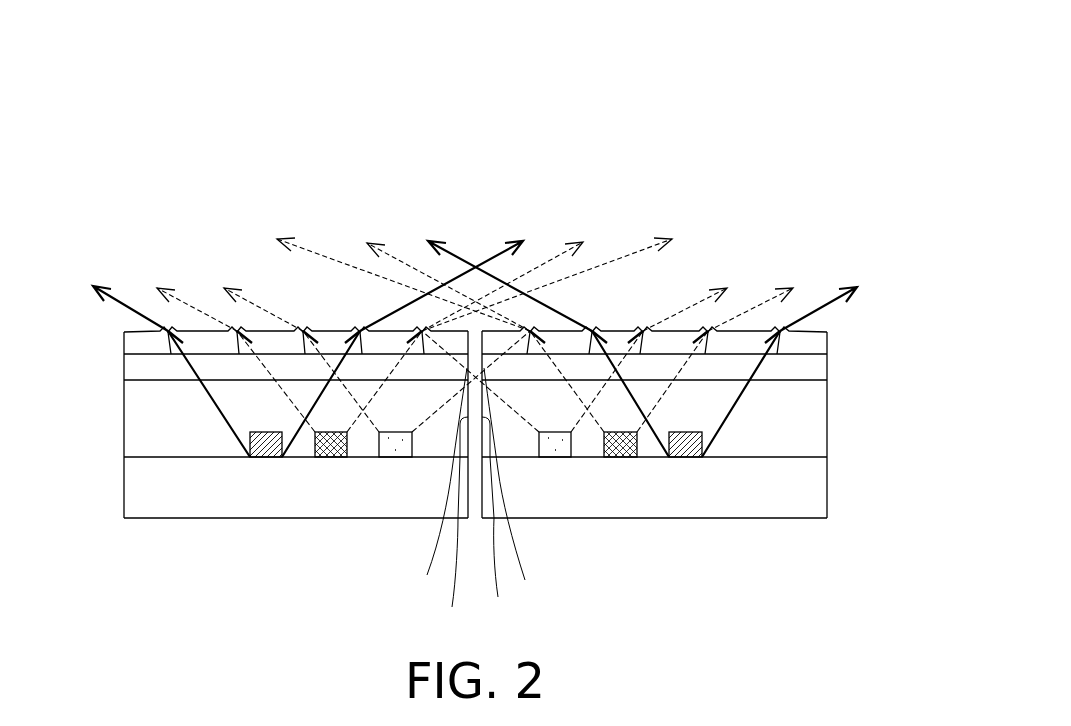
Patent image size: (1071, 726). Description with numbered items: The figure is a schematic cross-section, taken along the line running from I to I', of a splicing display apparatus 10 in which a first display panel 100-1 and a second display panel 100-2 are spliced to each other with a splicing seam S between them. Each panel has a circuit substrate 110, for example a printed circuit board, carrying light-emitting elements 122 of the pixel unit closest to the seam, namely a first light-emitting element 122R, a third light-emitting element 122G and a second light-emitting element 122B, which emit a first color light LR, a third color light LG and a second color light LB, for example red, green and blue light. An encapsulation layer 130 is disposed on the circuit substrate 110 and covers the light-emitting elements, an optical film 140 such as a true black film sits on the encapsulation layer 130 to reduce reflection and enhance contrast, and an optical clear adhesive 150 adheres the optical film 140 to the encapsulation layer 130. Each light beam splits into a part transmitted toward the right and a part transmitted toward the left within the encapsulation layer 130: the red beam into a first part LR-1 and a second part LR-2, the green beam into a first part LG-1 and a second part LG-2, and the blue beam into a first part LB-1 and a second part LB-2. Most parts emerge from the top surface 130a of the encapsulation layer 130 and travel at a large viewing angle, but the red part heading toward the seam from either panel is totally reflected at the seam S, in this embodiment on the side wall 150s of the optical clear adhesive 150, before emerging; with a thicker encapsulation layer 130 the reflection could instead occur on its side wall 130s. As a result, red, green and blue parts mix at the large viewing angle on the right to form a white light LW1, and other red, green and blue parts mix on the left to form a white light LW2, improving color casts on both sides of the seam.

The splicing display apparatus 10 is at (922, 628).
The first display panel 100-1 is at (895, 466).
The second display panel 100-2 is at (63, 464).
The circuit substrate 110 is at (827, 493).
The light-emitting element 122 is at (613, 14).
The first light-emitting element 122R is at (555, 532).
The third light-emitting element 122G is at (620, 532).
The second light-emitting element 122B is at (685, 532).
The encapsulation layer 130 is at (827, 417).
The top surface of the encapsulation layer 130a is at (827, 377).
The side wall of the encapsulation layer 130s is at (476, 525).
The optical film 140 is at (827, 336).
The optical clear adhesive 150 is at (827, 360).
The side wall of the optical clear adhesive 150s is at (476, 487).
The splicing seam S is at (481, 524).
The cross-sectional line end I is at (121, 543).
The cross-sectional line end I' is at (834, 543).
The white light LW1 is at (658, 180).
The white light LW2 is at (443, 168).
The first color light LR is at (738, 14).
The third color light LG is at (738, 92).
The second color light LB is at (848, 14).
The first part of the light beam LR LR-1 is at (690, 297).
The second part of the light beam LR LR-2 is at (638, 252).
The first part of the light beam LG LG-1 is at (752, 303).
The second part of the light beam LG LG-2 is at (402, 257).
The first part of the light beam LB LB-1 is at (827, 300).
The second part of the light beam LB LB-2 is at (463, 255).